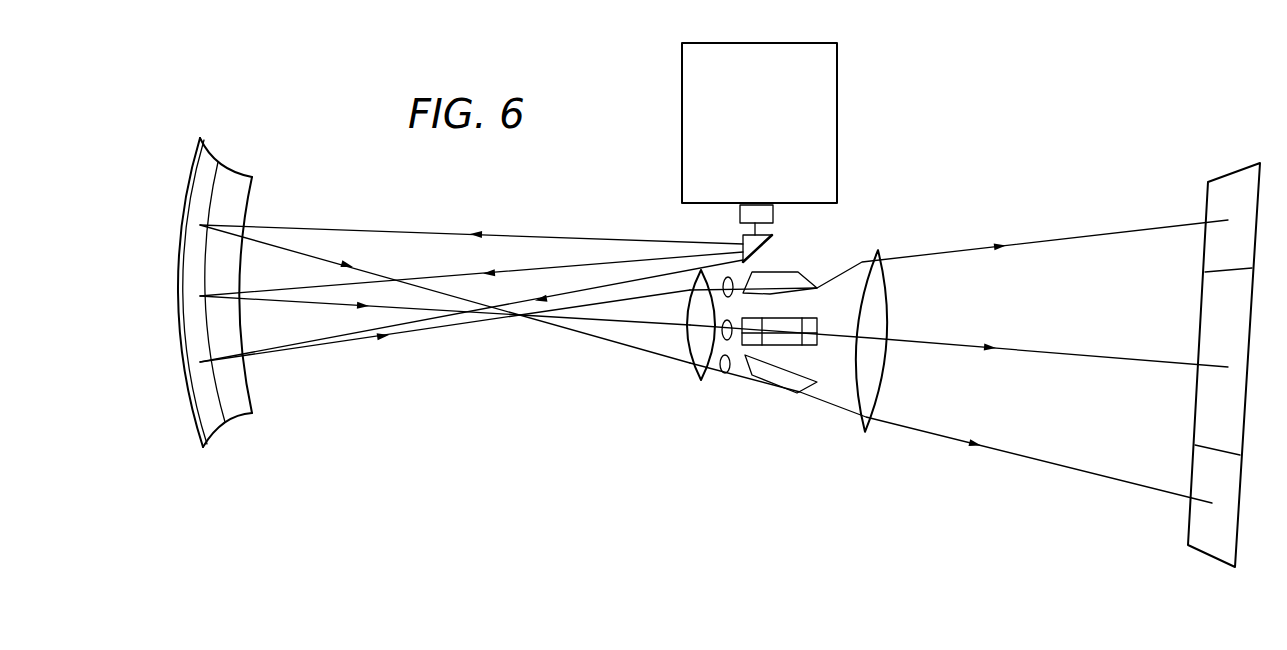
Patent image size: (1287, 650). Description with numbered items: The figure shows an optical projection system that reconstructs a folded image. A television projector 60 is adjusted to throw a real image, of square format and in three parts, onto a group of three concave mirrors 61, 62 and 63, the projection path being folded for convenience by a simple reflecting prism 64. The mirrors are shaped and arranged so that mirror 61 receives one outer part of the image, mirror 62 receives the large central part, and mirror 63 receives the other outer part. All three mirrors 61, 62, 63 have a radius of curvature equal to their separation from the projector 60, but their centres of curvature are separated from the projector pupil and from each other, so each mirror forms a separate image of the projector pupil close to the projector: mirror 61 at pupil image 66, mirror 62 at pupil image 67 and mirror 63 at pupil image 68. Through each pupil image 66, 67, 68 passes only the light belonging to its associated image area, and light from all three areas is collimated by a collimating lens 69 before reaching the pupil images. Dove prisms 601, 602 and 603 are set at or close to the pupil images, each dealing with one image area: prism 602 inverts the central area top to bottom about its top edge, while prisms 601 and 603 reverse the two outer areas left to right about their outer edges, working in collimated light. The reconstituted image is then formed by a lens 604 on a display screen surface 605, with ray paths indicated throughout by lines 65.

The television projector 60 is at (770, 143).
The concave mirror 61 is at (204, 147).
The concave mirror 62 is at (233, 172).
The concave mirror 63 is at (212, 438).
The reflecting prism 64 is at (775, 239).
The ray paths 65 is at (567, 265).
The pupil image 66 is at (726, 374).
The pupil image 67 is at (731, 323).
The pupil image 68 is at (735, 280).
The collimating lens 69 is at (688, 365).
The dove prism 601 is at (764, 388).
The dove prism 602 is at (801, 346).
The dove prism 603 is at (798, 291).
The lens 604 is at (878, 252).
The display screen surface 605 is at (1208, 188).